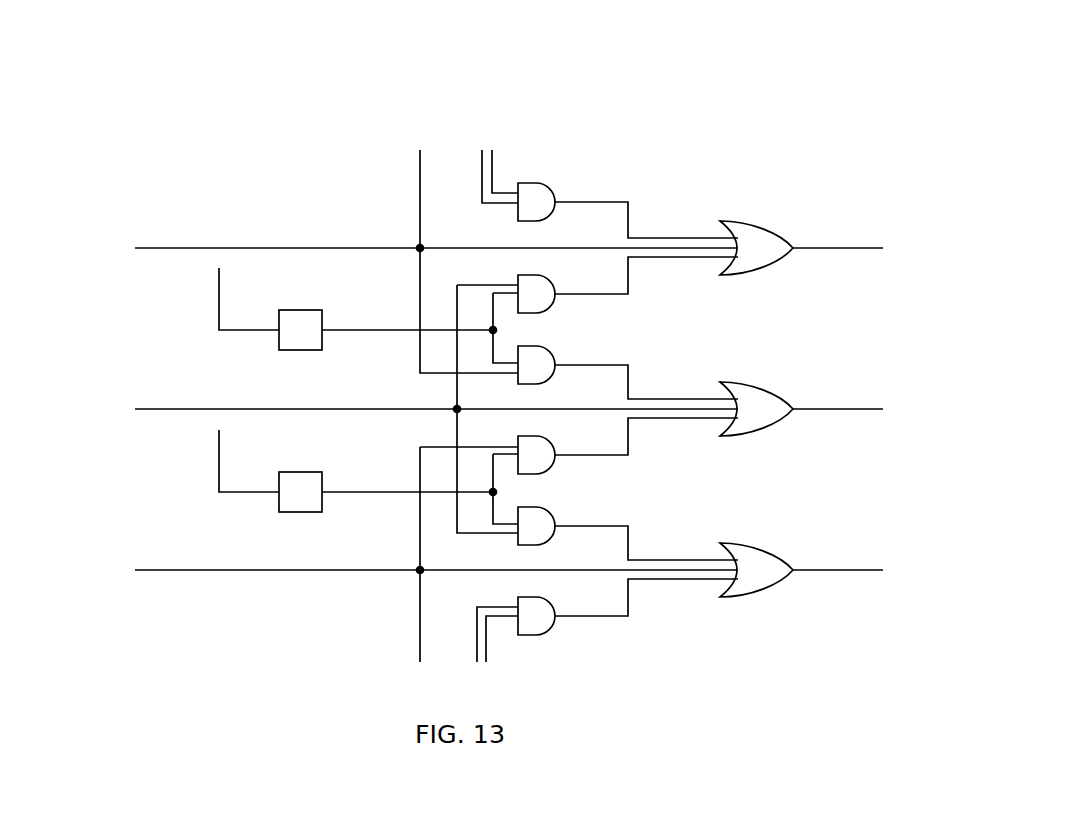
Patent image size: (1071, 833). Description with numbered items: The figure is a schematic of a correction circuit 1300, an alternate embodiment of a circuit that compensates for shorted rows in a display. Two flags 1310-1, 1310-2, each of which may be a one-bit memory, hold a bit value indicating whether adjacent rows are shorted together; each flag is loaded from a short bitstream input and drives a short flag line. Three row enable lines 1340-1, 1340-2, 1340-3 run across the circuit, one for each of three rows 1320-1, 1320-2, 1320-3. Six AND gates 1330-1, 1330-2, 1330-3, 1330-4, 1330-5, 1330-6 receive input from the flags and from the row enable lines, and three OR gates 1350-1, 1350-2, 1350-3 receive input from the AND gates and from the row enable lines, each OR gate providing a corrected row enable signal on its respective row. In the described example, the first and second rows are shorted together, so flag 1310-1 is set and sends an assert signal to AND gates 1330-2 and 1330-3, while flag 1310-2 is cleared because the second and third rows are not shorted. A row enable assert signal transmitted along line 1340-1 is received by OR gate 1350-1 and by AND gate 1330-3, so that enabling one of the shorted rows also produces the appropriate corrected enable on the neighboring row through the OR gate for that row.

The correction circuit 1300 is at (526, 91).
The flag 1310-1 is at (278, 338).
The flag 1310-2 is at (278, 500).
The row 1320-1 is at (810, 248).
The row 1320-2 is at (810, 409).
The row 1320-3 is at (810, 570).
The AND gate 1330-1 is at (552, 196).
The AND gate 1330-2 is at (552, 300).
The AND gate 1330-3 is at (552, 357).
The AND gate 1330-4 is at (552, 463).
The AND gate 1330-5 is at (552, 517).
The AND gate 1330-6 is at (552, 628).
The row enable line 1340-1 is at (247, 248).
The row enable line 1340-2 is at (275, 409).
The row enable line 1340-3 is at (275, 570).
The OR gate 1350-1 is at (772, 223).
The OR gate 1350-2 is at (772, 385).
The OR gate 1350-3 is at (772, 546).